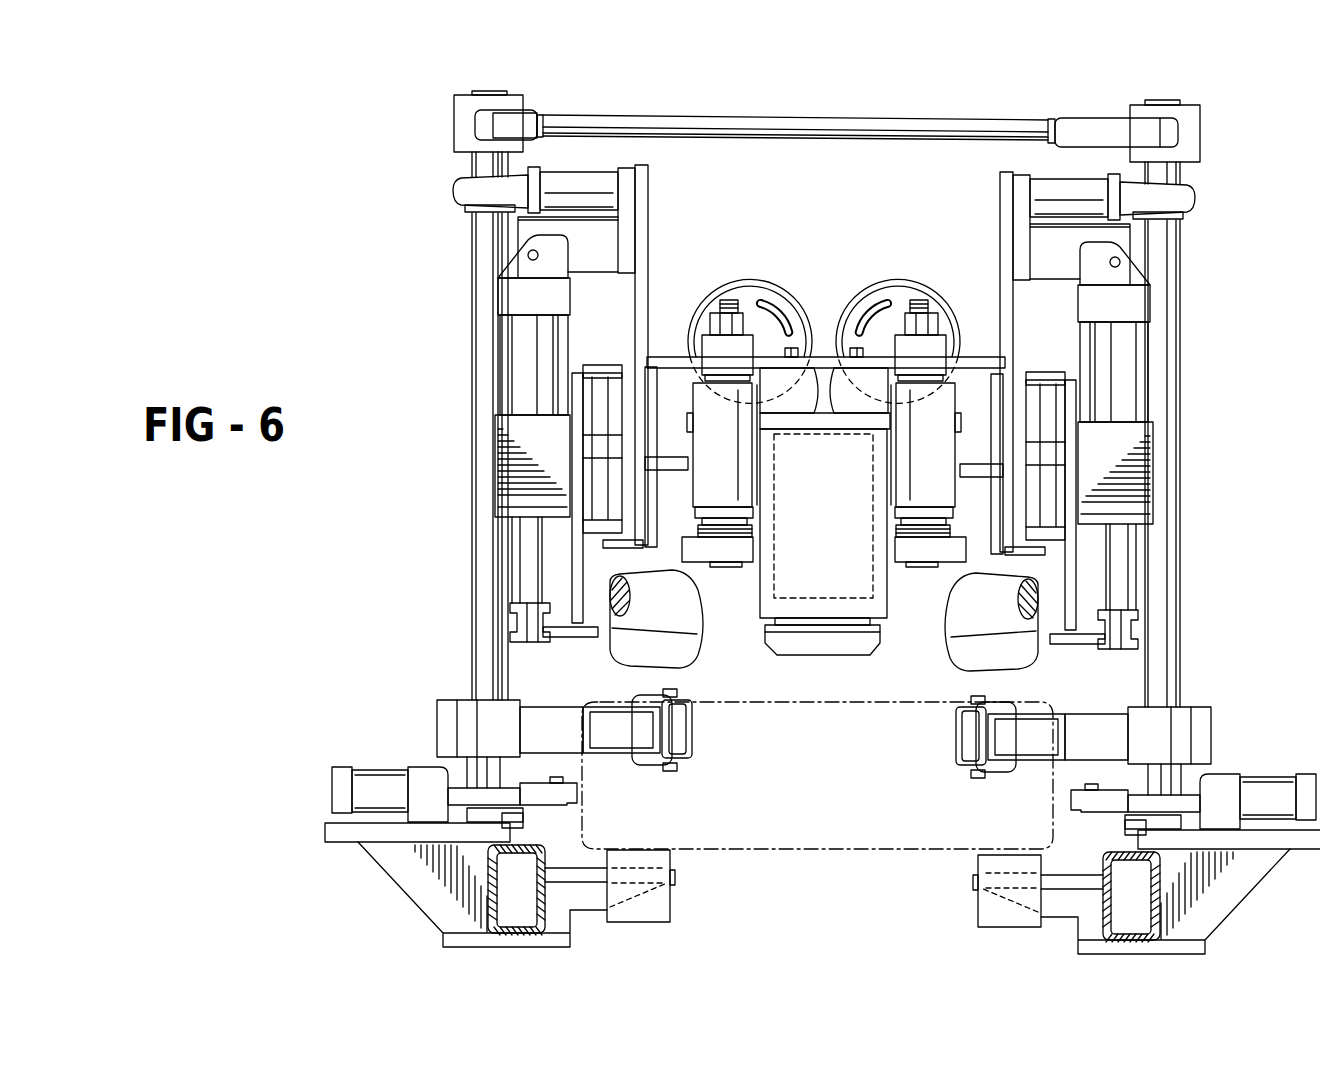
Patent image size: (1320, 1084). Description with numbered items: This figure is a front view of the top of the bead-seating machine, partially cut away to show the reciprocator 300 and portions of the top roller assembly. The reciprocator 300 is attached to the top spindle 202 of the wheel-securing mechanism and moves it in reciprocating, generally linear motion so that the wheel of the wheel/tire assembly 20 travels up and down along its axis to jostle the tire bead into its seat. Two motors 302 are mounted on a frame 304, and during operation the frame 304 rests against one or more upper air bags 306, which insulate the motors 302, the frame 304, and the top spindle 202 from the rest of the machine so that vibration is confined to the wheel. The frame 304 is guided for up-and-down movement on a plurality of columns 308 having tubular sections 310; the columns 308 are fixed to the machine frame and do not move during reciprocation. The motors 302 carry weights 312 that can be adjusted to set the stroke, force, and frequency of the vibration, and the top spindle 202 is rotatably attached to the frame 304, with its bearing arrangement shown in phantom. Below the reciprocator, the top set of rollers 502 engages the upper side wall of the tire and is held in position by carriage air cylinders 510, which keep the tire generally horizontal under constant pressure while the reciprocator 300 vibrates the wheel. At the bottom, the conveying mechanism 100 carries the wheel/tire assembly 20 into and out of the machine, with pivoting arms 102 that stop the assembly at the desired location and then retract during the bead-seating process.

The wheel/tire assembly 20 is at (772, 853).
The conveying mechanism 100 is at (672, 893).
The pivoting arms 102 is at (550, 712).
The top spindle 202 is at (832, 665).
The reciprocator 300 is at (815, 357).
The motors 302 is at (733, 288).
The frame 304 is at (853, 422).
The upper air bags 306 is at (765, 376).
The columns 308 is at (718, 548).
The tubular sections 310 is at (745, 466).
The weights 312 is at (790, 322).
The top set of rollers 502 is at (685, 619).
The carriage air cylinders 510 is at (522, 350).